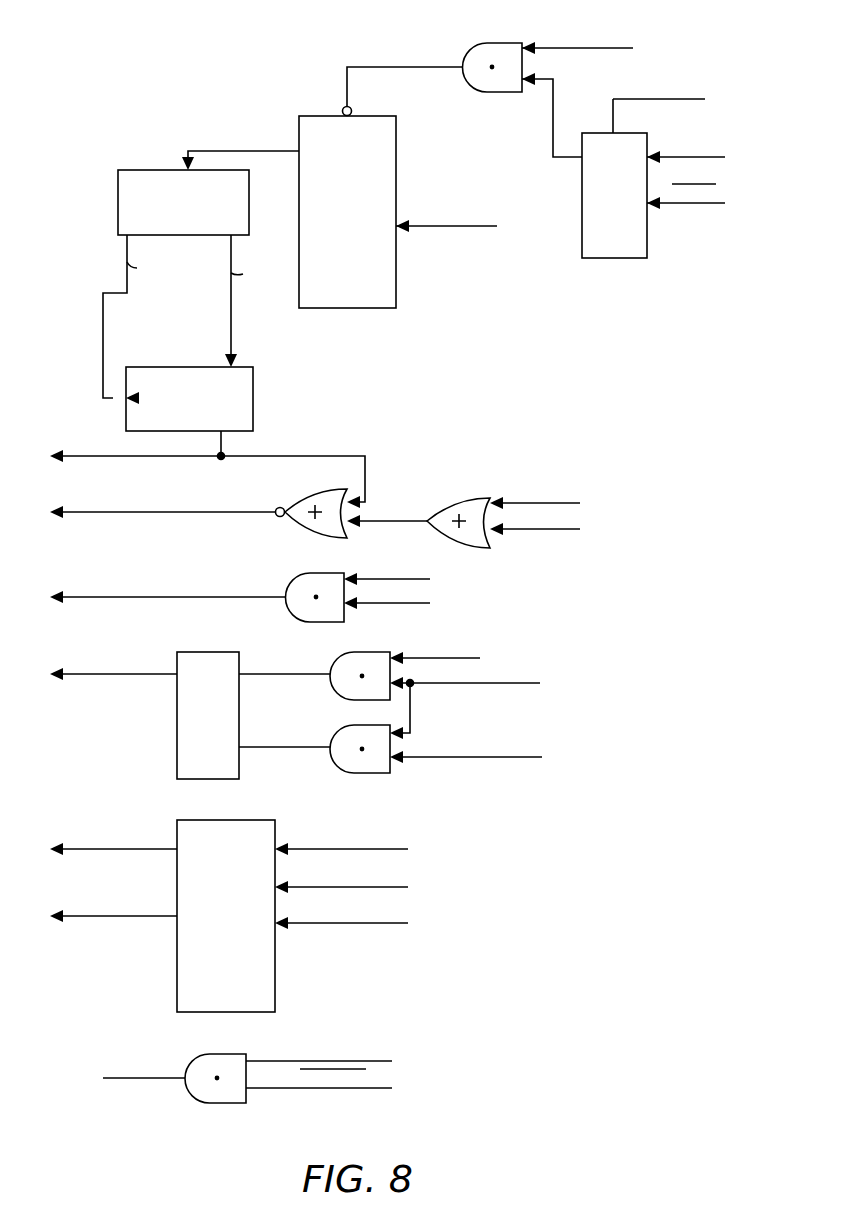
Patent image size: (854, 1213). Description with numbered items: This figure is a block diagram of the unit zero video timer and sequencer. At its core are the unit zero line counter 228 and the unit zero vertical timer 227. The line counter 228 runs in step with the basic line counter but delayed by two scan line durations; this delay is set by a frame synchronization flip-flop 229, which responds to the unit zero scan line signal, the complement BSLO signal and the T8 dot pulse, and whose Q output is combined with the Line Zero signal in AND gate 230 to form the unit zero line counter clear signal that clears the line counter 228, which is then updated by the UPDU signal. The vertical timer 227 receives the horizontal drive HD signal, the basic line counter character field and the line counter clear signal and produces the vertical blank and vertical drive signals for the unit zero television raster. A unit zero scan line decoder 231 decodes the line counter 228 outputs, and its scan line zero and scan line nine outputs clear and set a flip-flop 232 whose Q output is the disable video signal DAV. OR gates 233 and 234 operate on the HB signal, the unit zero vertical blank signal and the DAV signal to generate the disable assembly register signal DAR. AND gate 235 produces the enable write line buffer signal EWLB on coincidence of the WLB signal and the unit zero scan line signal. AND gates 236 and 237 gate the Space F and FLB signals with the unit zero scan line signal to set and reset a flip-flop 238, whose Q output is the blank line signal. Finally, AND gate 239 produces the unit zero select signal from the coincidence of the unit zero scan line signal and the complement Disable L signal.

The unit 0 vertical timer 227 is at (275, 986).
The unit 0 line counter 228 is at (358, 308).
The flip-flop 229 is at (619, 258).
The AND gate 230 is at (495, 43).
The unit 0 scan line decoder 231 is at (118, 190).
The flip-flop 232 is at (253, 388).
The OR gate 233 is at (465, 498).
The OR gate 234 is at (315, 538).
The AND gate 235 is at (320, 622).
The AND gate 236 is at (349, 652).
The AND gate 237 is at (358, 773).
The flip-flop 238 is at (213, 779).
The AND gate 239 is at (226, 1103).